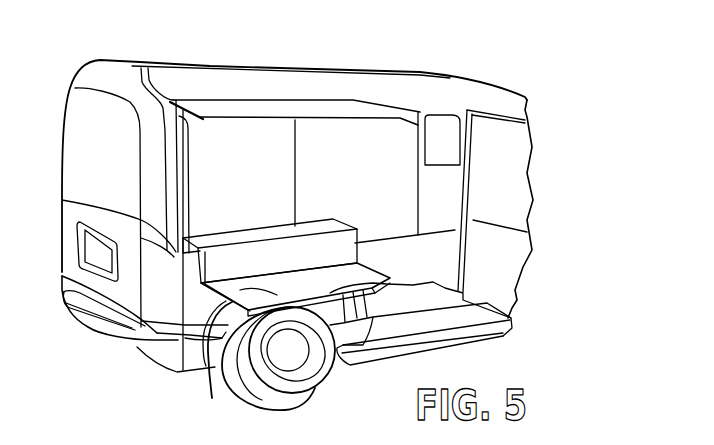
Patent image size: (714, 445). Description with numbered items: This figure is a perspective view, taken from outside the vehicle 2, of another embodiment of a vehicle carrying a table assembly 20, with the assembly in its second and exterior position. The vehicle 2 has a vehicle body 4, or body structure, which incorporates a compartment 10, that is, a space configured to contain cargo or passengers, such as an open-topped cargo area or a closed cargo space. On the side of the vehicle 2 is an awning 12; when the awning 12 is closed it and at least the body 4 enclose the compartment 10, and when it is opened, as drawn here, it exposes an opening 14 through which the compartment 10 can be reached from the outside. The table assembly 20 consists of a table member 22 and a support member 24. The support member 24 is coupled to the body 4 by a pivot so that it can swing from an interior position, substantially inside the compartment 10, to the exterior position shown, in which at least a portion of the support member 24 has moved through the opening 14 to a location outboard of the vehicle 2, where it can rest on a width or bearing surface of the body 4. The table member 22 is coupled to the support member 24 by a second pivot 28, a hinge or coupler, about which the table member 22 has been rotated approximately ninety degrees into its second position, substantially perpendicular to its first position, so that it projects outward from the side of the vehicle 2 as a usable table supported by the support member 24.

The vehicle 2 is at (552, 113).
The vehicle body 4 is at (212, 298).
The compartment 10 is at (262, 167).
The awning 12 is at (300, 110).
The opening 14 is at (208, 182).
The table assembly 20 is at (383, 250).
The table member 22 is at (212, 398).
The support member 24 is at (220, 267).
The second pivot 28 is at (207, 287).